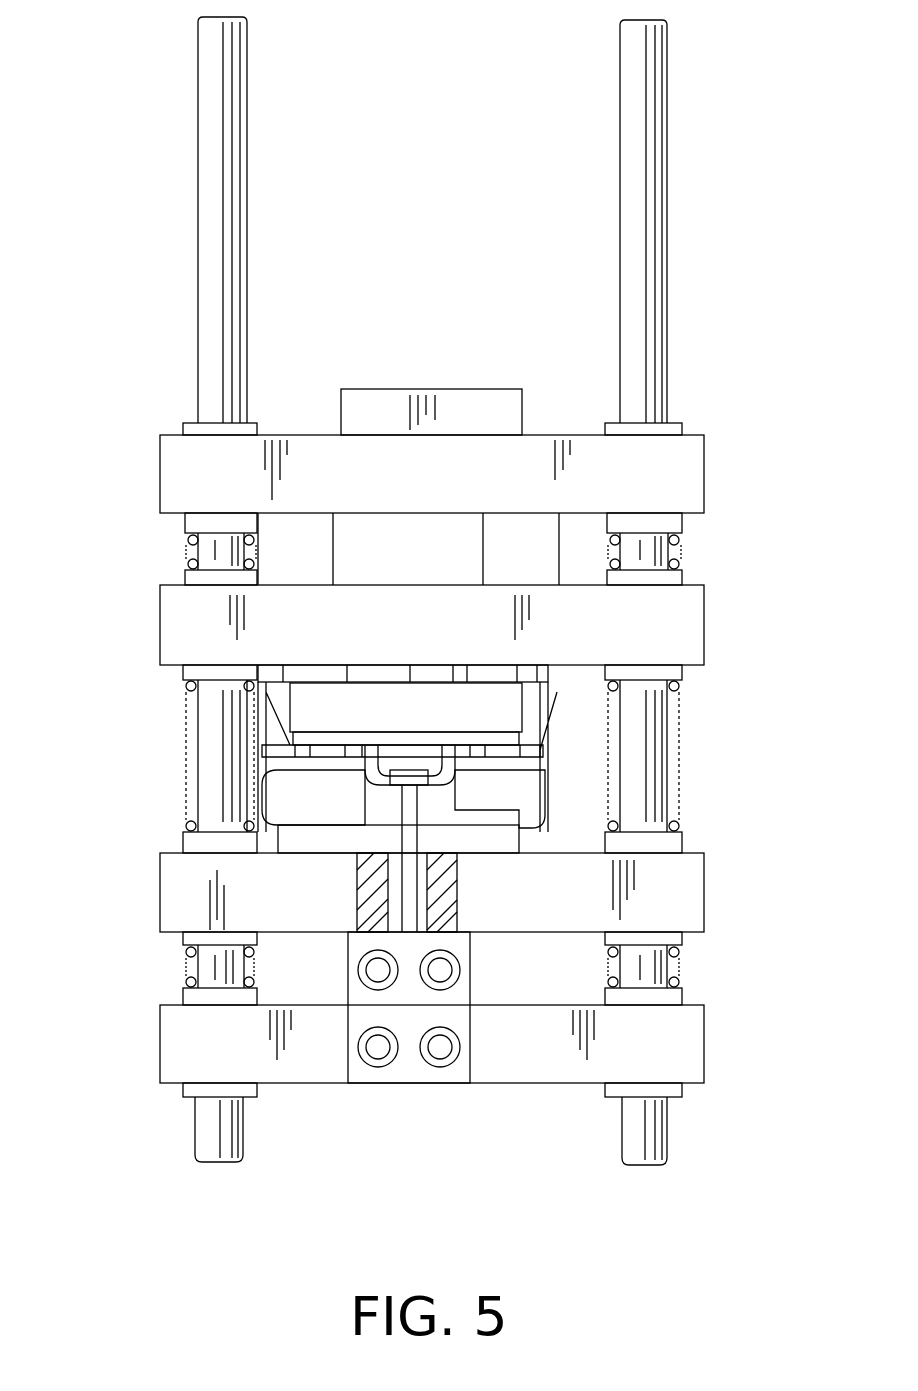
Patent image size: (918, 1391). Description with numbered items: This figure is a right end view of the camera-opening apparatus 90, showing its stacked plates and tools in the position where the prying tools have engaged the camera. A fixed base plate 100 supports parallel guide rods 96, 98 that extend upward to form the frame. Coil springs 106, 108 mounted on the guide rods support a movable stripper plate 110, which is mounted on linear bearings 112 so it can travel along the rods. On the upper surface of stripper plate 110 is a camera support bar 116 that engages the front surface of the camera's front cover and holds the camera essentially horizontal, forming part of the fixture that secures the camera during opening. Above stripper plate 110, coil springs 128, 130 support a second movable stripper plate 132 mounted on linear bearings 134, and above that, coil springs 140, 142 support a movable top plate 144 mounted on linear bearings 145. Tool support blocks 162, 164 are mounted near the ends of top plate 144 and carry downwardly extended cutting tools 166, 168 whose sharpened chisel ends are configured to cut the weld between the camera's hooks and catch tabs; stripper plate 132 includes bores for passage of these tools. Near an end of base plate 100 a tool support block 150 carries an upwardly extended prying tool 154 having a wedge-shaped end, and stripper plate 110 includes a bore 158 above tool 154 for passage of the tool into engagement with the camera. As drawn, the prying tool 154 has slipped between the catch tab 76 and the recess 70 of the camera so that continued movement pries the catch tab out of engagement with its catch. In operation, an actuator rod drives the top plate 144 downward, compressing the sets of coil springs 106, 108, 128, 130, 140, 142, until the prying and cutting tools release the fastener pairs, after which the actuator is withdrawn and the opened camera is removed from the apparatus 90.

The guide rod 98 is at (230, 68).
The guide rod 96 is at (645, 45).
The linear bearing 145 is at (190, 428).
The top plate 144 is at (170, 466).
The coil spring 142 is at (188, 545).
The coil spring 140 is at (680, 545).
The linear bearing 134 is at (188, 577).
The tool support block 162 is at (303, 550).
The tool support block 164 is at (498, 565).
The stripper plate 132 is at (170, 620).
The cutting tool 166 is at (265, 684).
The cutting tool 168 is at (553, 688).
The recess 70 is at (437, 773).
The catch tab 76 is at (410, 775).
The camera support bar 116 is at (485, 835).
The coil spring 130 is at (185, 710).
The coil spring 128 is at (685, 705).
The linear bearing 112 is at (185, 838).
The stripper plate 110 is at (165, 890).
The prying tool 154 is at (398, 895).
The bore 158 is at (430, 915).
The coil spring 108 is at (185, 965).
The coil spring 106 is at (680, 965).
The base plate 100 is at (553, 1060).
The tool support block 150 is at (412, 1075).
The apparatus 90 is at (190, 1181).